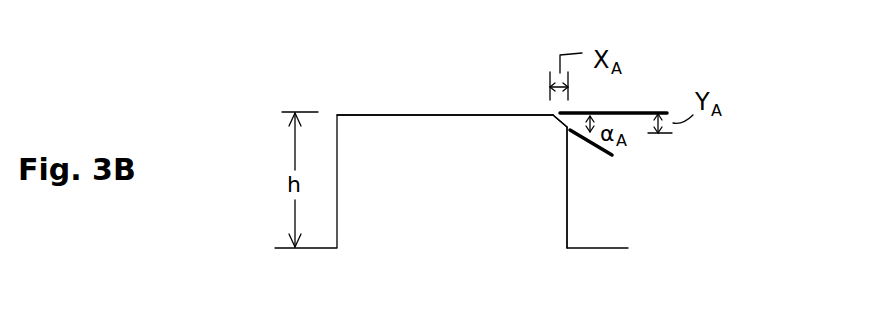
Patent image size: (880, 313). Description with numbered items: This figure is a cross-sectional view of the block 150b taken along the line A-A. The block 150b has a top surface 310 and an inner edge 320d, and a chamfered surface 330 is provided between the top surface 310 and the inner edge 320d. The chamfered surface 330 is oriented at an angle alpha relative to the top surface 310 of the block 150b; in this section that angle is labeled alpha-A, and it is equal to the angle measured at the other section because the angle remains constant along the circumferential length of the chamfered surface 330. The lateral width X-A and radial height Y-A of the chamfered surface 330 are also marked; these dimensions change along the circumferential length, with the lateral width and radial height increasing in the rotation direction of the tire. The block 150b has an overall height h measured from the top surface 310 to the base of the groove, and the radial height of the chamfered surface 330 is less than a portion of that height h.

The block 150b is at (458, 199).
The top surface 310 is at (412, 117).
The chamfered surface 330 is at (558, 123).
The inner edge 320d is at (566, 212).